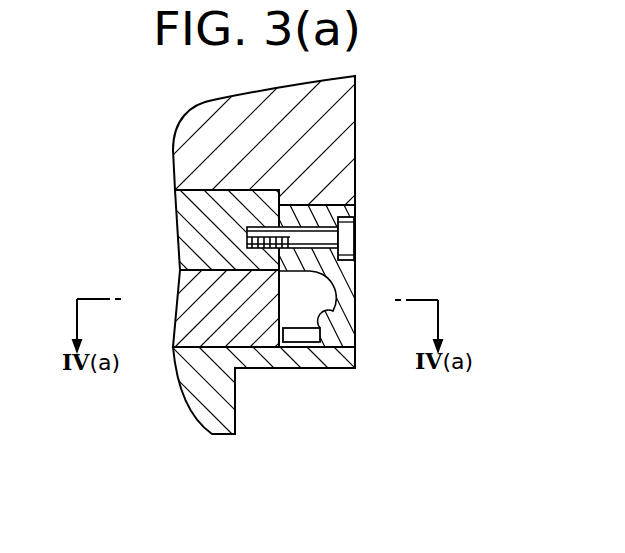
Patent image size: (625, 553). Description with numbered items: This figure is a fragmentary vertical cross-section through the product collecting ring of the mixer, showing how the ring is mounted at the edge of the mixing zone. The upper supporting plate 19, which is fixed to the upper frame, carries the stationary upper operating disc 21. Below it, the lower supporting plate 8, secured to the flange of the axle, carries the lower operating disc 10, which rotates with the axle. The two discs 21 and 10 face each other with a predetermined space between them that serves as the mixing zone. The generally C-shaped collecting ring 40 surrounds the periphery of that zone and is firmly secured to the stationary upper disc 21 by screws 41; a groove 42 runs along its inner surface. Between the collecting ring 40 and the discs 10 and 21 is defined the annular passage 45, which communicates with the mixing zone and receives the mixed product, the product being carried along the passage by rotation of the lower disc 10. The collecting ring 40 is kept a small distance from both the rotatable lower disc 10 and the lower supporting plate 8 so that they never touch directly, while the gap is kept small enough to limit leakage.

The upper supporting plate 19 is at (197, 153).
The upper operating disc 21 is at (200, 220).
The lower operating disc 10 is at (193, 324).
The lower supporting plate 8 is at (202, 388).
The collecting ring 40 is at (342, 332).
The screws 41 is at (350, 247).
The groove 42 is at (318, 320).
The passage 45 is at (294, 303).